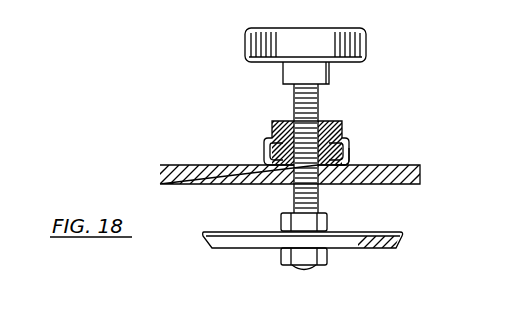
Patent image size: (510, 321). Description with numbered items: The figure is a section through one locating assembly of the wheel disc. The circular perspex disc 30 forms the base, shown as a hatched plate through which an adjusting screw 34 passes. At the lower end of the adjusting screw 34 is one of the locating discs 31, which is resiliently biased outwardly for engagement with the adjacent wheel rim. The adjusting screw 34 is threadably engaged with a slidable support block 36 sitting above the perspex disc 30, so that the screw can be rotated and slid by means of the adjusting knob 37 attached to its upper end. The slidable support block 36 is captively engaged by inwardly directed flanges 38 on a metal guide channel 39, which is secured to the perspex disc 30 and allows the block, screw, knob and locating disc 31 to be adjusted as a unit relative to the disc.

The perspex disc 30 is at (195, 164).
The locating disc 31 is at (339, 244).
The adjusting screw 34 is at (319, 101).
The slidable support block 36 is at (282, 121).
The adjusting knob 37 is at (364, 43).
The inwardly directed flanges 38 is at (268, 139).
The metal guide channel 39 is at (350, 153).